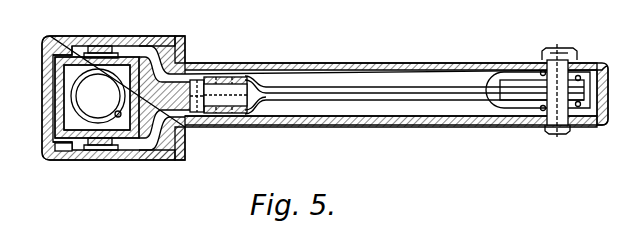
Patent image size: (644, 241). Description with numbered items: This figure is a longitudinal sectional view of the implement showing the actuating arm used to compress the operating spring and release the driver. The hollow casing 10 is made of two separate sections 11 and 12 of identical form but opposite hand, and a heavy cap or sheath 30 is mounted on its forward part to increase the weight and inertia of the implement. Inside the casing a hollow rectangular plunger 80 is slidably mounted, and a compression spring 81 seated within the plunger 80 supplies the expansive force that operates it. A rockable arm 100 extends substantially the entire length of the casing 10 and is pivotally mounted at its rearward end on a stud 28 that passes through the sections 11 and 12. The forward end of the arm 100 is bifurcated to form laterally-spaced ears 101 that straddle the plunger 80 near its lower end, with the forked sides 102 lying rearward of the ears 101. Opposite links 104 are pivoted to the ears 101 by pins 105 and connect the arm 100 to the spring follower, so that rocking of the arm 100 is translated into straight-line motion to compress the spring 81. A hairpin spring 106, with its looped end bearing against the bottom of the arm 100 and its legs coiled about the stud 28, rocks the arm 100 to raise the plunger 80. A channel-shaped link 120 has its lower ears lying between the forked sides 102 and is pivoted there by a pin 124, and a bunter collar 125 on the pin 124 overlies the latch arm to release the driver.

The hollow casing 10 is at (472, 54).
The casing section 11 is at (338, 68).
The casing section 12 is at (360, 118).
The stud 28 is at (560, 48).
The cap or sheath 30 is at (55, 161).
The plunger 80 is at (139, 97).
The compression spring 81 is at (70, 110).
The rockable arm 100 is at (393, 87).
The ears 101 is at (139, 50).
The forked sides 102 is at (197, 112).
The links 104 is at (113, 53).
The pins 105 is at (97, 49).
The hairpin spring 106 is at (522, 108).
The link 120 is at (270, 75).
The pin 124 is at (218, 80).
The collar 125 is at (237, 112).